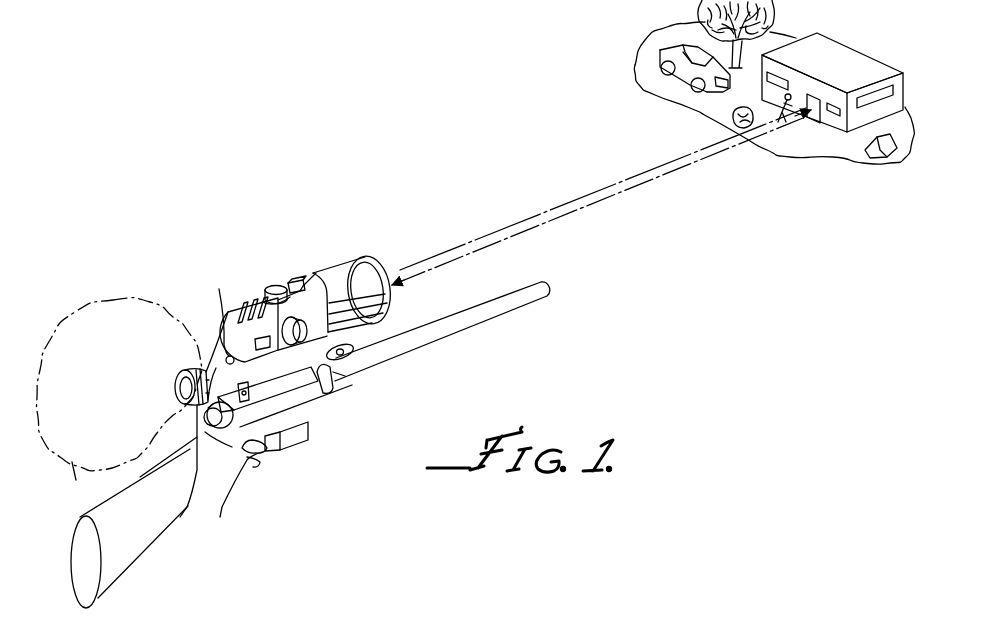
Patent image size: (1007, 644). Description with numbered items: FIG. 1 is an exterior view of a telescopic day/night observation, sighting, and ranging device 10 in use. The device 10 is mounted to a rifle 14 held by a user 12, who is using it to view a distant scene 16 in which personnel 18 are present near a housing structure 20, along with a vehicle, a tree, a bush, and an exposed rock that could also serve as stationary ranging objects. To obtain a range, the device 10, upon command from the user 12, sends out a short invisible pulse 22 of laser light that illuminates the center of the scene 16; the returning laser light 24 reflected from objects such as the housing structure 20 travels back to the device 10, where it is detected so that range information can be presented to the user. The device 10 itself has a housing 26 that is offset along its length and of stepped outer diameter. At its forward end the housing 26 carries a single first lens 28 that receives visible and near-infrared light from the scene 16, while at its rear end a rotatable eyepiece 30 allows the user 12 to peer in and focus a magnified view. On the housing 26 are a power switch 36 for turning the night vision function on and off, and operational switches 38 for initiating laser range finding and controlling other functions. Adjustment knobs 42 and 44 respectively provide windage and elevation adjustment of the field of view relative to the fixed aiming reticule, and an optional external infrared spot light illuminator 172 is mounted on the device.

The telescopic day/night observation, ranging, and sighting device 10 is at (314, 244).
The user 12 is at (97, 298).
The rifle 14 is at (401, 374).
The distant scene 16 is at (787, 167).
The personnel 18 is at (792, 98).
The housing structure 20 is at (838, 124).
The pulse of laser light 22 is at (550, 210).
The returning laser light 24 is at (559, 214).
The housing 26 is at (313, 283).
The first lens 28 is at (386, 258).
The eyepiece 30 is at (176, 386).
The power switch 36 is at (266, 348).
The operational switches 38 is at (237, 302).
The windage adjustment knob 42 is at (306, 333).
The elevation adjustment knob 44 is at (276, 286).
The external infrared spot light illuminator 172 is at (290, 280).